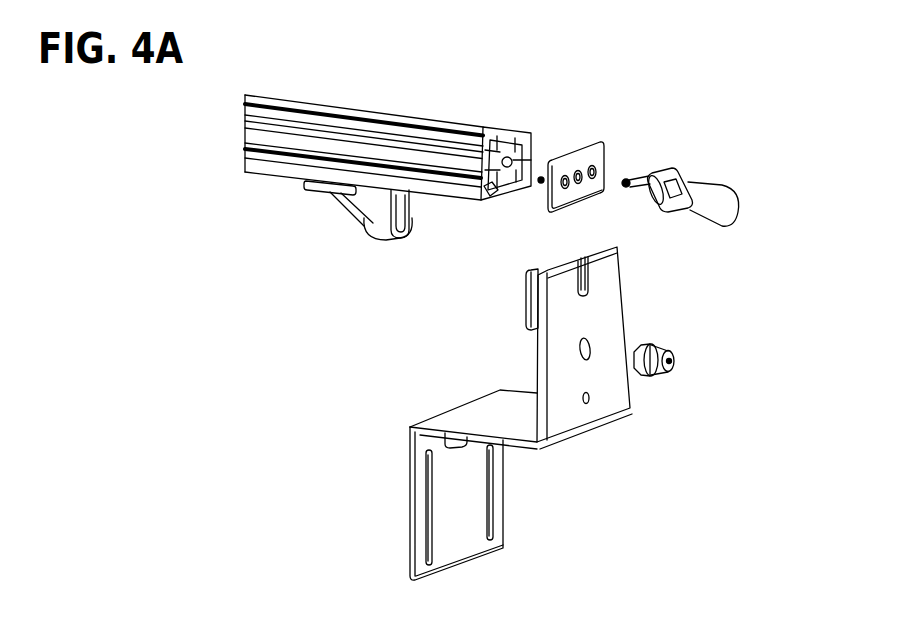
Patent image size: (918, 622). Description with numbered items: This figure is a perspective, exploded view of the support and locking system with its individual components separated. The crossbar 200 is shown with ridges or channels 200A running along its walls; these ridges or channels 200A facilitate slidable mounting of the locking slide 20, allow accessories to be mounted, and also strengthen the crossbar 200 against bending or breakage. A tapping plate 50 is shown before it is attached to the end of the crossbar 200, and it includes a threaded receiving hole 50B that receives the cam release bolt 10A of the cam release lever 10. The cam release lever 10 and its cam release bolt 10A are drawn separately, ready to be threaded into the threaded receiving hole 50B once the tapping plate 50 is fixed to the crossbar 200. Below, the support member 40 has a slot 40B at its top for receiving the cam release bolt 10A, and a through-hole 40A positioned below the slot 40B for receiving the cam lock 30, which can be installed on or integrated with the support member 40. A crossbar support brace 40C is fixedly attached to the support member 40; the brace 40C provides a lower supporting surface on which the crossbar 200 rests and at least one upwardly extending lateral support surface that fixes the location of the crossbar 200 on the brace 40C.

The crossbar 200 is at (420, 139).
The ridges or channels 200A is at (494, 190).
The locking slide 20 is at (372, 211).
The tapping plate 50 is at (604, 150).
The threaded receiving hole 50B is at (576, 171).
The cam release lever 10 is at (702, 200).
The cam release bolt 10A is at (631, 181).
The cam lock 30 is at (672, 352).
The support member 40 is at (557, 403).
The through-hole 40A is at (583, 361).
The slot 40B is at (582, 274).
The crossbar support brace 40C is at (532, 299).